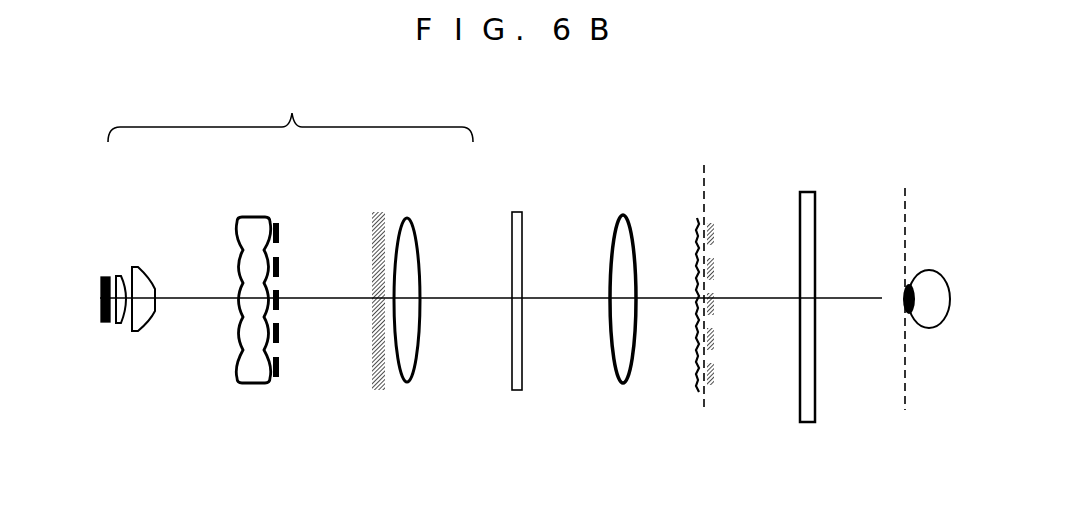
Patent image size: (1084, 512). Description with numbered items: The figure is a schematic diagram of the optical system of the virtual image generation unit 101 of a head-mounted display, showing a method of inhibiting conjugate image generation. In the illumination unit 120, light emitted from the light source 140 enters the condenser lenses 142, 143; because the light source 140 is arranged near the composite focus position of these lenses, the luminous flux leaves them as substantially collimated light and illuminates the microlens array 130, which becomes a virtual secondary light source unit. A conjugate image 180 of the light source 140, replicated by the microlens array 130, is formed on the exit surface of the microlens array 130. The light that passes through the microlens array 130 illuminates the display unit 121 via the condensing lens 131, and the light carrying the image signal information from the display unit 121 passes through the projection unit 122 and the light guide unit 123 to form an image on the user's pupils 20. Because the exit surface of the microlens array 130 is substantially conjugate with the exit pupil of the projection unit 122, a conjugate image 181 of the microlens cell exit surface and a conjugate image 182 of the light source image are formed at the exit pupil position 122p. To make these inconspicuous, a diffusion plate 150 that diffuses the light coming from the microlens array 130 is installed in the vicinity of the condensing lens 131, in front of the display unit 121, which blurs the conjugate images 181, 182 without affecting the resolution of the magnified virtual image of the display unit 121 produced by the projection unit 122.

The virtual image generation unit 101 is at (169, 88).
The illumination unit 120 is at (290, 114).
The light source 140 is at (101, 298).
The condenser lens 142 is at (123, 277).
The condenser lens 143 is at (148, 277).
The microlens array 130 is at (252, 223).
The conjugate image of the light source 180 is at (278, 383).
The diffusion plate 150 is at (372, 217).
The condensing lens 131 is at (412, 222).
The display unit 121 is at (517, 212).
The projection unit 122 is at (625, 215).
The exit pupil position of the projection unit 122p is at (703, 274).
The conjugate image of the microlens cell 181 is at (697, 392).
The conjugate image of the light source 182 is at (712, 392).
The light guide unit 123 is at (810, 192).
The user's pupils 20 is at (930, 272).